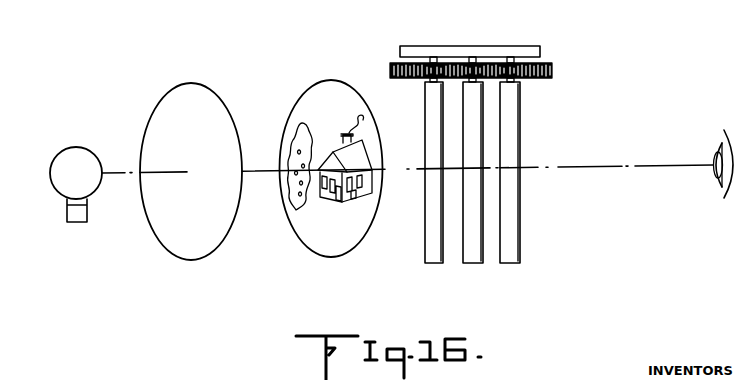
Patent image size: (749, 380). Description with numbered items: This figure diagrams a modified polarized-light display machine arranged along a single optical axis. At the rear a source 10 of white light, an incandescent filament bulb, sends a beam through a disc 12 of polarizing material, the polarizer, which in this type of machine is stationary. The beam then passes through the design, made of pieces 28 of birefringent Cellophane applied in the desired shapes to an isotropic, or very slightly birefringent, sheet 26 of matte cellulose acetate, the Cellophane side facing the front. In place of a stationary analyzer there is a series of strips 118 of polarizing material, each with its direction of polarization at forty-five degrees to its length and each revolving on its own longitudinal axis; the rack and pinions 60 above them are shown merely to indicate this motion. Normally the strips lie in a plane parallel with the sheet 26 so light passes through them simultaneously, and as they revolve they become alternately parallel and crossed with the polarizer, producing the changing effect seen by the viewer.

The source of white light 10 is at (73, 153).
The disc of polarizing material 12 is at (180, 97).
The isotropic sheet 26 is at (318, 88).
The pieces of birefringent sheet 28 is at (358, 153).
The rack and pinions 60 is at (554, 53).
The strips of polarizing material 118 is at (510, 263).